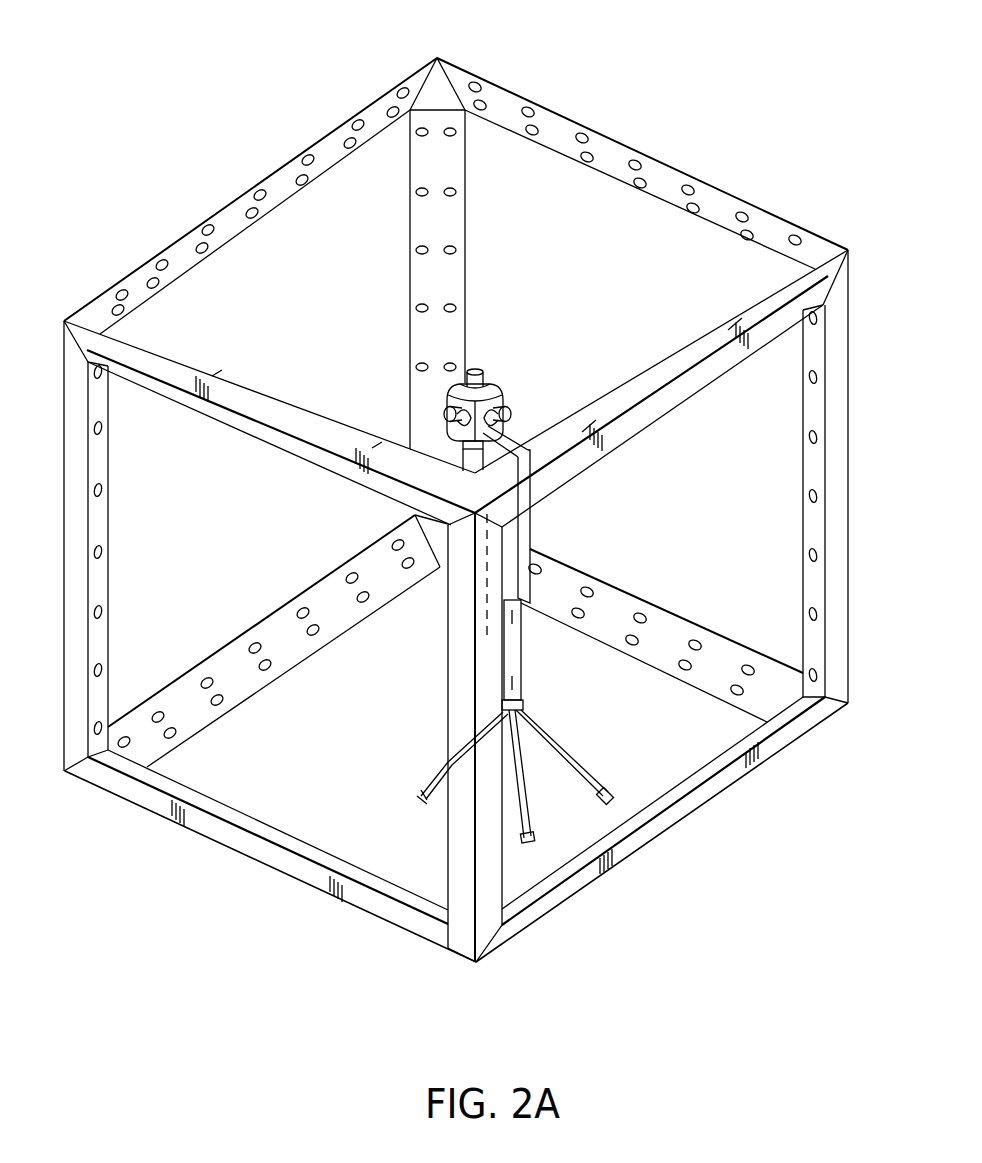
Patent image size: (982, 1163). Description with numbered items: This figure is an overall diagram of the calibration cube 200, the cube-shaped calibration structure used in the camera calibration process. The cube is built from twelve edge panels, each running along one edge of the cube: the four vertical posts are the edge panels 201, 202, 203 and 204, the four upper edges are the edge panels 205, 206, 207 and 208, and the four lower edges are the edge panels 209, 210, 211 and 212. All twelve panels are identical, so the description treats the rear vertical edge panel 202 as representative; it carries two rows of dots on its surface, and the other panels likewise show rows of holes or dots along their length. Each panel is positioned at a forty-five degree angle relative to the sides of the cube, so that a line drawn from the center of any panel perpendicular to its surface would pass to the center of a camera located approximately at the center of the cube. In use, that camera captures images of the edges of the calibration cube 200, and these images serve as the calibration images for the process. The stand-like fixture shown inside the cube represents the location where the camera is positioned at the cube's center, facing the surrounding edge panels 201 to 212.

The calibration cube 200 is at (143, 838).
The edge panel 201 is at (106, 521).
The edge panel 202 is at (463, 220).
The edge panel 203 is at (843, 397).
The edge panel 204 is at (492, 918).
The edge panel 205 is at (305, 143).
The edge panel 206 is at (593, 118).
The edge panel 207 is at (832, 270).
The edge panel 208 is at (90, 342).
The edge panel 209 is at (292, 881).
The edge panel 210 is at (270, 628).
The edge panel 211 is at (608, 592).
The edge panel 212 is at (675, 815).